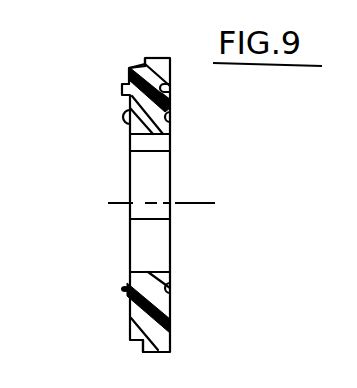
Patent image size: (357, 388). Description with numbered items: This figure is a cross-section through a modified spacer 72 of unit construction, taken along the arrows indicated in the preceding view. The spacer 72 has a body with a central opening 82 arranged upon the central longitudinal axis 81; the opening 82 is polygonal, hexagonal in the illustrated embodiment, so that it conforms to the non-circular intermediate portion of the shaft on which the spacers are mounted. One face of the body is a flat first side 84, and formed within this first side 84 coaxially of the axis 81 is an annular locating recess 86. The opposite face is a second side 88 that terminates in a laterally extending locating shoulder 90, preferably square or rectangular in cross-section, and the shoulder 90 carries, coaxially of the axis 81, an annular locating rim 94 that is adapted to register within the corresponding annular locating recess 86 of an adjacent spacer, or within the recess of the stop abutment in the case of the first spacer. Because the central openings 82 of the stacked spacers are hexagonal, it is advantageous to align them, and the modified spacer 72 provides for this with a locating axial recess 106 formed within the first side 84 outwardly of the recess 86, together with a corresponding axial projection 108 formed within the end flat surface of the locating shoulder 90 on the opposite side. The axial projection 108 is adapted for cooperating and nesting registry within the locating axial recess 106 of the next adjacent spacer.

The spacer 72 is at (157, 62).
The central longitudinal axis 81 is at (200, 203).
The central opening 82 is at (132, 175).
The first side 84 is at (168, 101).
The annular locating recess 86 is at (166, 117).
The second side 88 is at (142, 66).
The locating shoulder 90 is at (130, 342).
The annular locating rim 94 is at (124, 288).
The locating axial recess 106 is at (171, 89).
The axial projection 108 is at (122, 88).